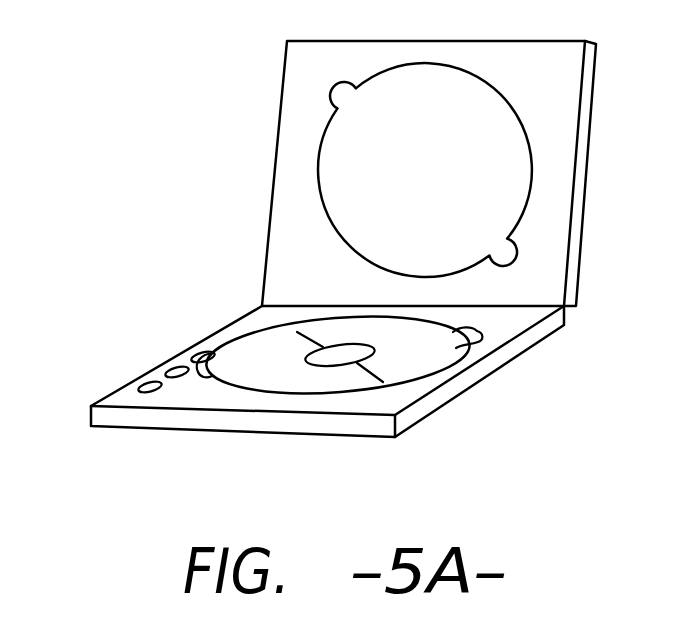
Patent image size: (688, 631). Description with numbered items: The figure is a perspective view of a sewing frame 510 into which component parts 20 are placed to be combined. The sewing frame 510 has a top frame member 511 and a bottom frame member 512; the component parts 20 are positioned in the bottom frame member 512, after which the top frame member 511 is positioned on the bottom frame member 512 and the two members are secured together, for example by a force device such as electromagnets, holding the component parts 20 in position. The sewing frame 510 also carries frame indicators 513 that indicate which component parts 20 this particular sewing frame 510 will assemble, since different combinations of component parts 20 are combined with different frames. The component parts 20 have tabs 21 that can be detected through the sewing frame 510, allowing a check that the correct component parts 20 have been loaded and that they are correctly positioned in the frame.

The sewing frame 510 is at (126, 99).
The top frame member 511 is at (280, 112).
The bottom frame member 512 is at (236, 318).
The frame indicators 513 is at (192, 352).
The component parts 20 is at (298, 378).
The tabs 21 is at (193, 373).